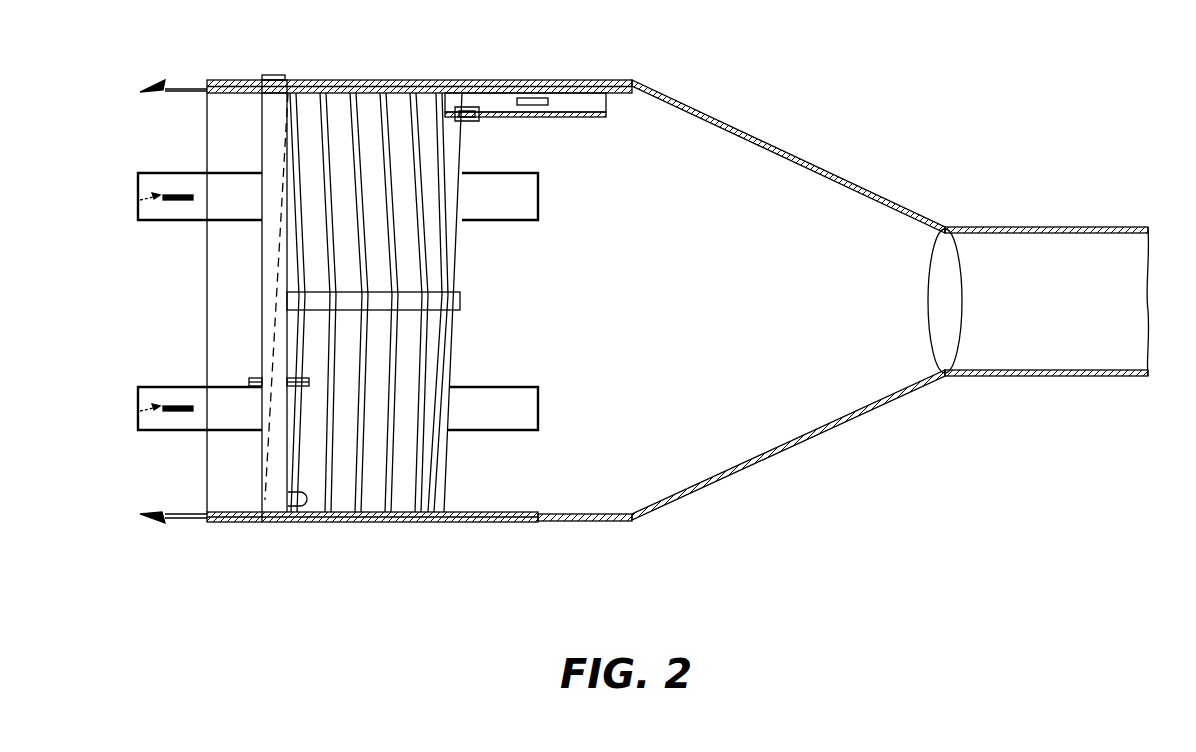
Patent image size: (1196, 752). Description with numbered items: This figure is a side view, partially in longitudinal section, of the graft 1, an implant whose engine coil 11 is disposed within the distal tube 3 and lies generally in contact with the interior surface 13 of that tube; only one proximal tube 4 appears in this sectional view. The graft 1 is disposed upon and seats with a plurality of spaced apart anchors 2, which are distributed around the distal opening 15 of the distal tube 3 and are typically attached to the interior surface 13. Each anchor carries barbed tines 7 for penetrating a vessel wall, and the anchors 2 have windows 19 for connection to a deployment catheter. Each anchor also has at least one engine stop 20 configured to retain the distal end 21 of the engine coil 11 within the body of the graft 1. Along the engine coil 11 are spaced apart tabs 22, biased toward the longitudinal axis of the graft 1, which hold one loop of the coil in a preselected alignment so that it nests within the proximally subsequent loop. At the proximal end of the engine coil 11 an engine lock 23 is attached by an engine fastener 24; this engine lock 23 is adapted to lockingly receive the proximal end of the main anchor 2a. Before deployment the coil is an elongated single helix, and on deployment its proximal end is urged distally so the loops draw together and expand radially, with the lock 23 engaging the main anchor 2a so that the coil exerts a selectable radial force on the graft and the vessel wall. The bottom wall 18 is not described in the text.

The graft 1 is at (772, 90).
The anchors 2 is at (148, 205).
The main anchor 2a is at (152, 92).
The distal tube 3 is at (240, 81).
The proximal tube 4 is at (1108, 227).
The barbed tines 7 is at (150, 522).
The engine coil 11 is at (432, 470).
The interior surface 13 is at (735, 443).
The distal opening 15 is at (206, 118).
The bottom wall 18 is at (572, 522).
The windows 19 is at (183, 405).
The engine stop 20 is at (312, 380).
The distal end 21 is at (308, 100).
The tabs 22 is at (452, 300).
The engine lock 23 is at (580, 100).
The engine fastener 24 is at (463, 108).